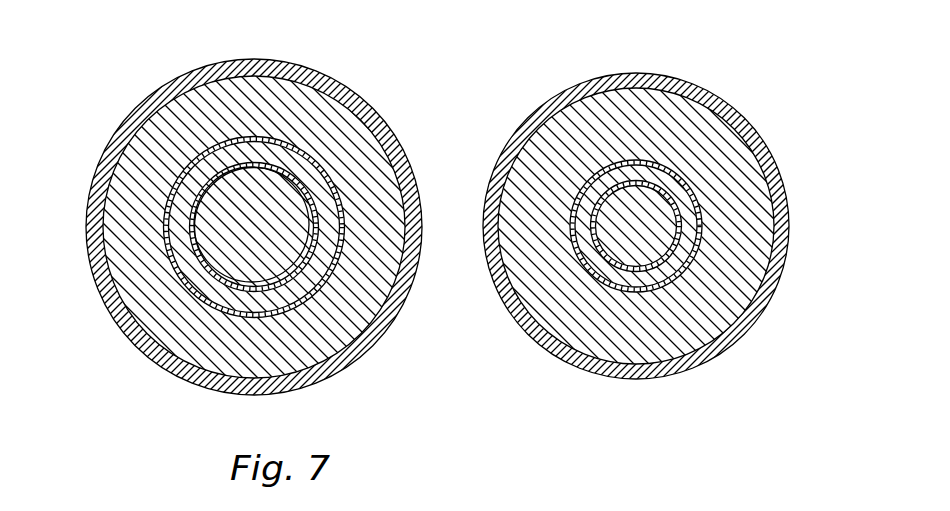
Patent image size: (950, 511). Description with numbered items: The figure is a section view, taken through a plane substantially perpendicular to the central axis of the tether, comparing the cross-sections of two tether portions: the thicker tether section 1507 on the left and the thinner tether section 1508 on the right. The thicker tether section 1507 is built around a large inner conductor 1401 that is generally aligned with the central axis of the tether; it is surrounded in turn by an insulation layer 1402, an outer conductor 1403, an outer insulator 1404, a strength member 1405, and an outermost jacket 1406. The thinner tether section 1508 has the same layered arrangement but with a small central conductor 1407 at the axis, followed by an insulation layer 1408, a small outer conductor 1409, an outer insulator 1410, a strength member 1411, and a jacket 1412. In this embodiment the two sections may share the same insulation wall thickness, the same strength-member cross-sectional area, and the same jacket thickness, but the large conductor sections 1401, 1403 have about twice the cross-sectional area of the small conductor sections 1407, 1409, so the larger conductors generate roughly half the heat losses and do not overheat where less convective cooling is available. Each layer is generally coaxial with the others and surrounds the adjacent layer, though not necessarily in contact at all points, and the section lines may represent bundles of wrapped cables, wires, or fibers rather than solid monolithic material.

The inner conductor 1401 is at (255, 187).
The insulation layer 1402 is at (223, 170).
The outer conductor 1403 is at (202, 173).
The outer insulator 1404 is at (183, 173).
The strength member 1405 is at (117, 250).
The jacket 1406 is at (120, 317).
The thicker tether section 1507 is at (167, 380).
The central conductor 1407 is at (652, 207).
The insulation layer 1408 is at (668, 199).
The outer conductor 1409 is at (683, 200).
The outer insulator 1410 is at (688, 201).
The strength member 1411 is at (720, 198).
The jacket 1412 is at (780, 270).
The thinner tether section 1508 is at (584, 378).